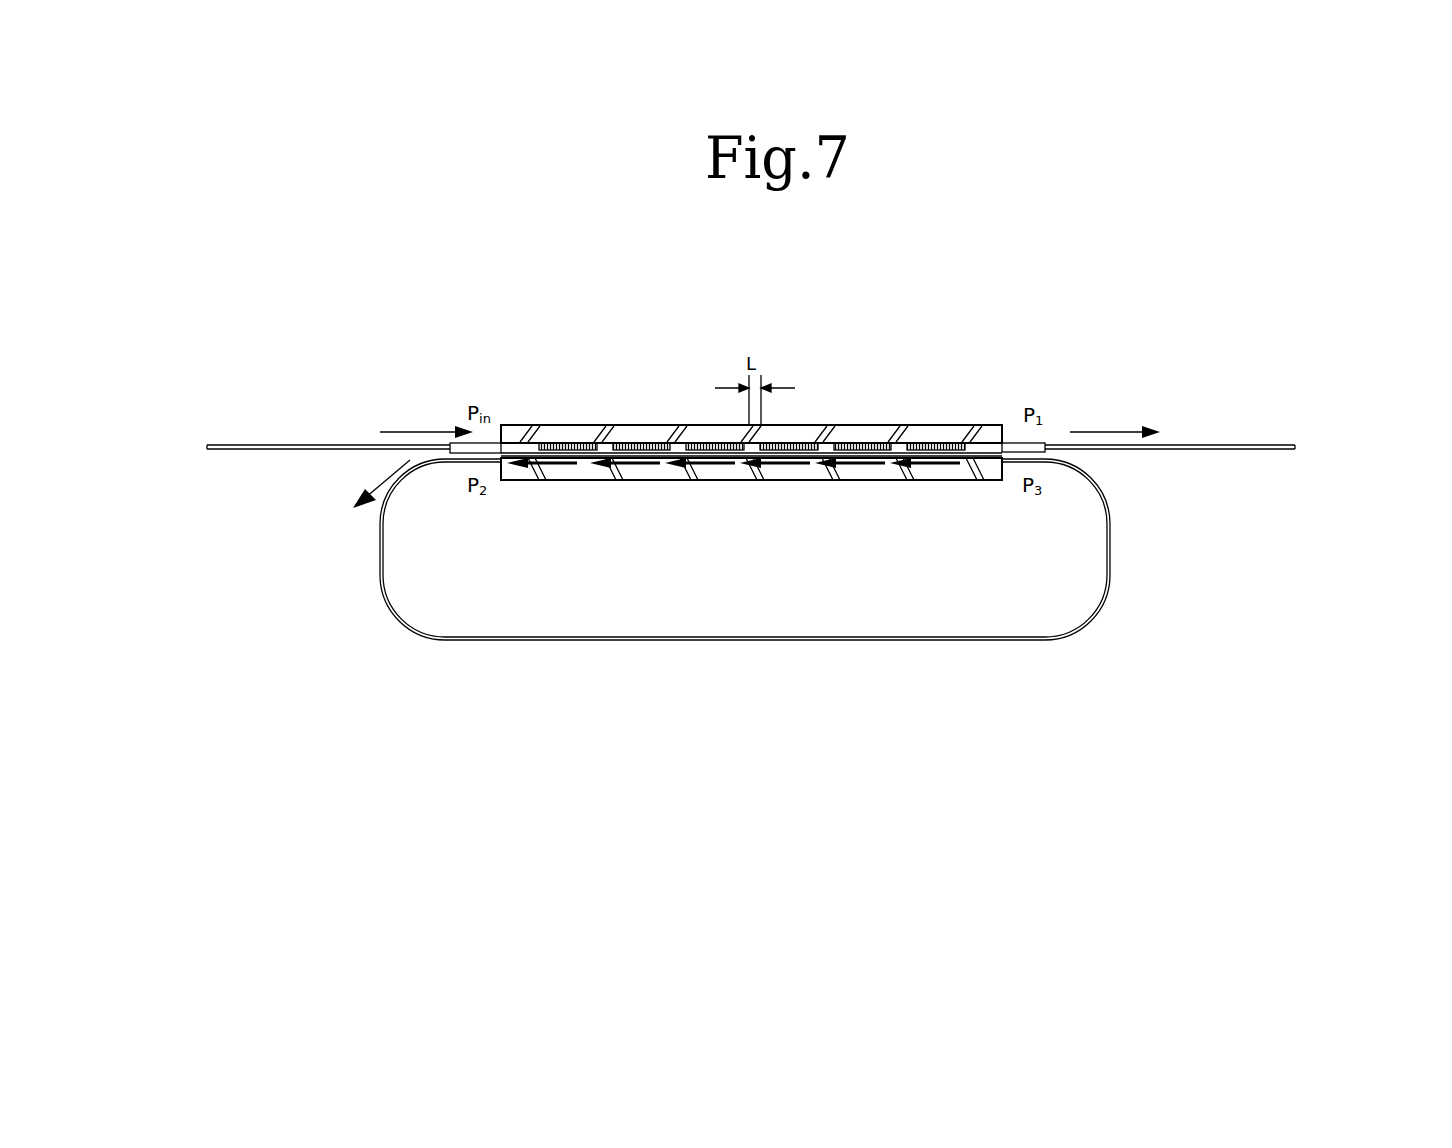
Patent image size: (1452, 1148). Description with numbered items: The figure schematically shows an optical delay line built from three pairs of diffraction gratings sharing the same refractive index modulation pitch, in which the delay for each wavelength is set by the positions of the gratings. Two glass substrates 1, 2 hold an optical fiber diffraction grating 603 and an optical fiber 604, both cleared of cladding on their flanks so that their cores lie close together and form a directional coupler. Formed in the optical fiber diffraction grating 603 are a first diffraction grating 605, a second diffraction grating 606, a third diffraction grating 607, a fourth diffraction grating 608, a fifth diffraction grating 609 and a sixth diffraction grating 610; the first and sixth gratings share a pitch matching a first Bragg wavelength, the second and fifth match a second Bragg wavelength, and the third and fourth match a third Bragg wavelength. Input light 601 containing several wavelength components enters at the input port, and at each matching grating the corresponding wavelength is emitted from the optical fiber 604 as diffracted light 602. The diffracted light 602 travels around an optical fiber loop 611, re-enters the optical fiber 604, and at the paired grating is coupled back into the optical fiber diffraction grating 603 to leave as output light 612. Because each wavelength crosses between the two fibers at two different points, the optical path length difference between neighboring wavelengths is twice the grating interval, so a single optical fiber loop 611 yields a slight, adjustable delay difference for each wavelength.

The glass substrate 1 is at (920, 425).
The glass substrate 2 is at (932, 472).
The input light 601 is at (393, 432).
The diffracted light 602 is at (390, 476).
The optical fiber diffraction grating 603 is at (1005, 440).
The optical fiber 604 is at (656, 465).
The first diffraction grating 605 is at (540, 427).
The second diffraction grating 606 is at (615, 425).
The third diffraction grating 607 is at (685, 427).
The fourth diffraction grating 608 is at (833, 424).
The fifth diffraction grating 609 is at (888, 426).
The sixth diffraction grating 610 is at (960, 427).
The optical fiber loop 611 is at (655, 643).
The output light 612 is at (1123, 432).